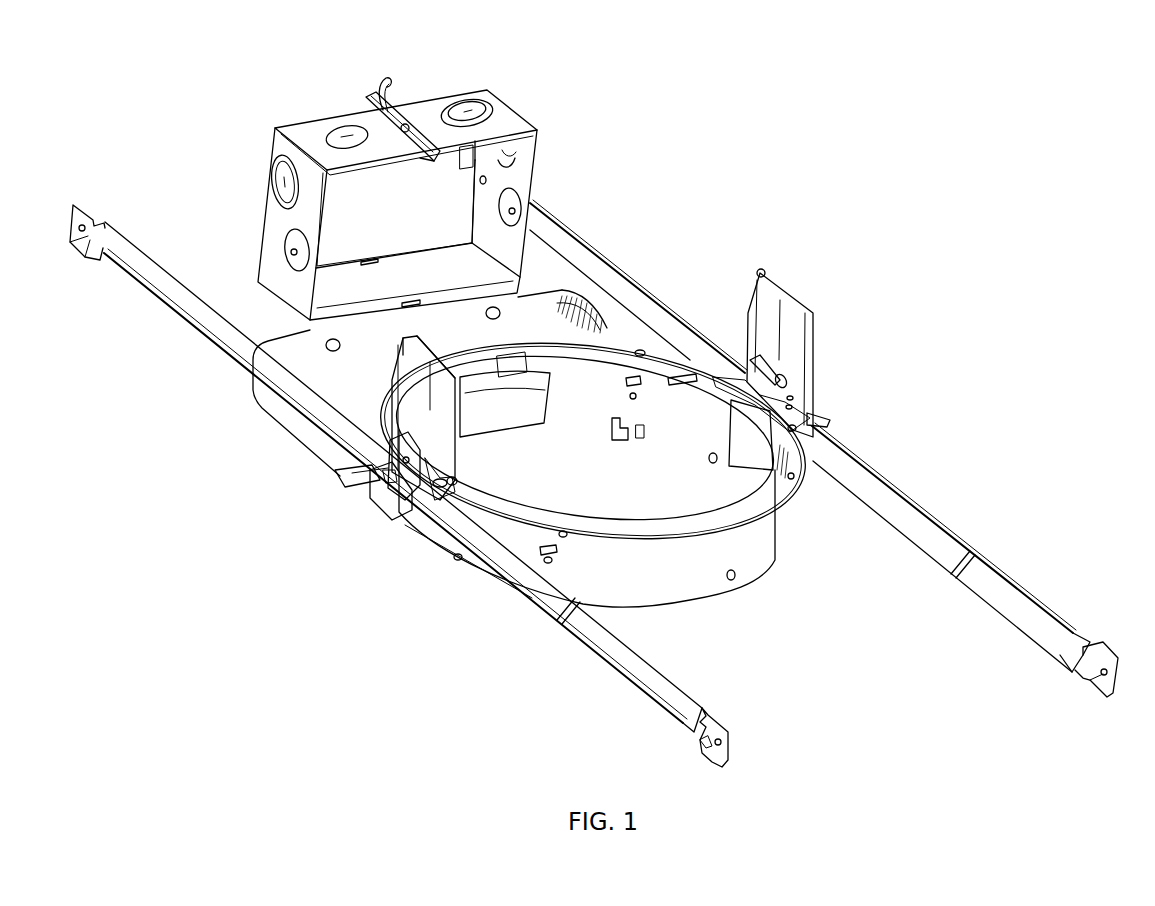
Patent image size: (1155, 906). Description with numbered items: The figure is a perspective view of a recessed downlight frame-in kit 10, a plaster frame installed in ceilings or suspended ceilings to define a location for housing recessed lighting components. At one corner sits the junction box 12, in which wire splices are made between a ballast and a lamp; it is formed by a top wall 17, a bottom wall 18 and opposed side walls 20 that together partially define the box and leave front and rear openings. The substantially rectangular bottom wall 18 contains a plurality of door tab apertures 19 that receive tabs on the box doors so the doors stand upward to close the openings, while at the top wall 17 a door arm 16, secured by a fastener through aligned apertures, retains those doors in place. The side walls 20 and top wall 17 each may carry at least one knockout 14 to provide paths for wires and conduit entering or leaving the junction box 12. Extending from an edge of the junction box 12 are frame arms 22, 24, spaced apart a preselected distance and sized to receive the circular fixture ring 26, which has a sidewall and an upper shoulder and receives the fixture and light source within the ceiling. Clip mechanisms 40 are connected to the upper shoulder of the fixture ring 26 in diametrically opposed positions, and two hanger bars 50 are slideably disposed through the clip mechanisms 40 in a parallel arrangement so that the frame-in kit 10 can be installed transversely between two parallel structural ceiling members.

The frame-in kit 10 is at (767, 177).
The junction box 12 is at (308, 112).
The knockout 14 is at (480, 110).
The door arm 16 is at (421, 128).
The top wall 17 is at (475, 90).
The bottom wall 18 is at (407, 263).
The door tab apertures 19 is at (370, 258).
The side walls 20 is at (272, 218).
The frame arm 22 is at (286, 420).
The frame arm 24 is at (597, 292).
The fixture ring 26 is at (752, 590).
The clip mechanisms 40 is at (829, 396).
The hanger bars 50 is at (549, 632).